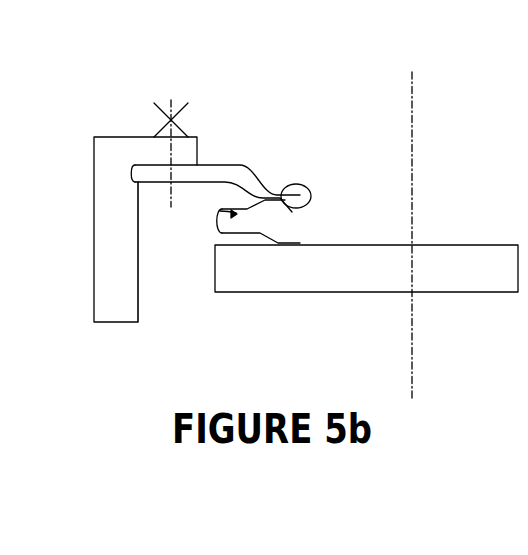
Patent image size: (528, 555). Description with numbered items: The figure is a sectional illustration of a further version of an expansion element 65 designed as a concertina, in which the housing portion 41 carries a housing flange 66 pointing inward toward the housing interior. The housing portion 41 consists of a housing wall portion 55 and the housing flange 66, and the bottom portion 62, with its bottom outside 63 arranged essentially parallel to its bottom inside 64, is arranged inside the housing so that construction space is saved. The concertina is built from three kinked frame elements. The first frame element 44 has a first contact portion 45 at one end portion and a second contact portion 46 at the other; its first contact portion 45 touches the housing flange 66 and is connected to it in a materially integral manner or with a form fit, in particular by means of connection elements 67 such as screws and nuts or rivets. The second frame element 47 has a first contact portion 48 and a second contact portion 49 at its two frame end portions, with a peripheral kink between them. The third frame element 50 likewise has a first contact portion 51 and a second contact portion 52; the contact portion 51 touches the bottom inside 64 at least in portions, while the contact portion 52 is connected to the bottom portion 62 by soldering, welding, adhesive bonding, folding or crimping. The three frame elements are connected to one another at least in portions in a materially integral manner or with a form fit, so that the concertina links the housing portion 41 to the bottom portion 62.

The housing portion 41 is at (108, 232).
The first frame element 44 is at (247, 180).
The first contact portion of the first frame element 45 is at (159, 165).
The second contact portion of the first frame element 46 is at (291, 193).
The second frame element 47 is at (258, 202).
The first contact portion of the second frame element 48 is at (290, 209).
The second contact portion of the second frame element 49 is at (218, 212).
The third frame element 50 is at (275, 226).
The first contact portion of the third frame element 51 is at (246, 225).
The second contact portion of the third frame element 52 is at (292, 238).
The housing wall portion 55 is at (117, 278).
The bottom portion 62 is at (477, 271).
The bottom outside 63 is at (465, 245).
The bottom inside 64 is at (384, 293).
The expansion element 65 is at (162, 64).
The housing flange 66 is at (183, 156).
The connection elements 67 is at (185, 105).